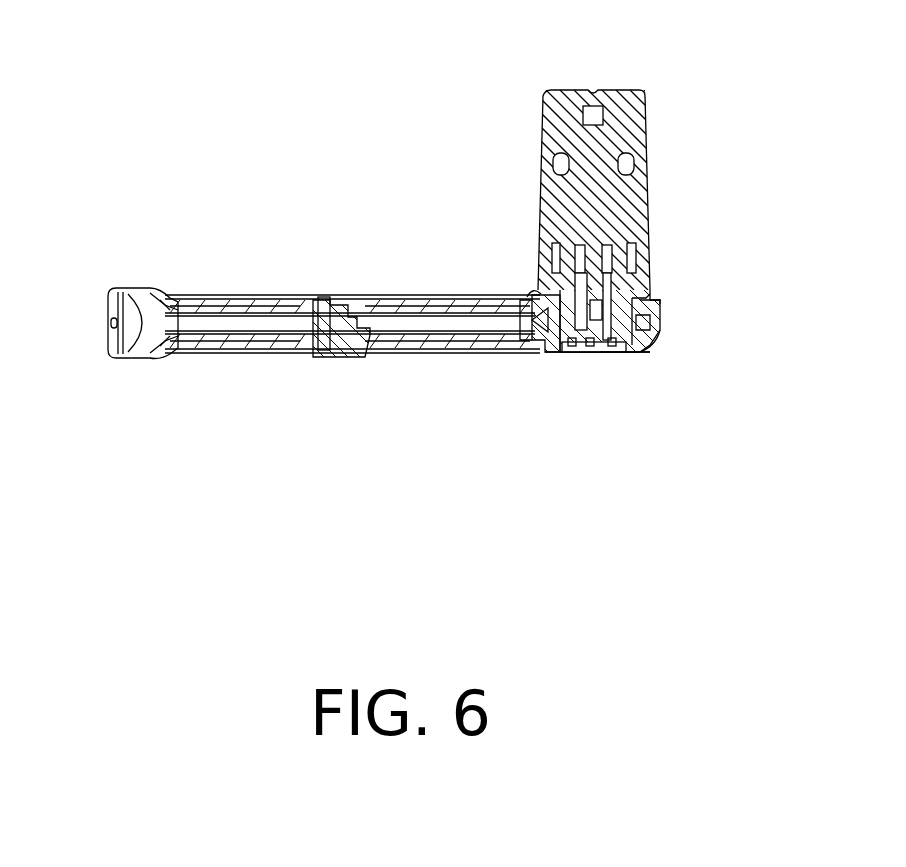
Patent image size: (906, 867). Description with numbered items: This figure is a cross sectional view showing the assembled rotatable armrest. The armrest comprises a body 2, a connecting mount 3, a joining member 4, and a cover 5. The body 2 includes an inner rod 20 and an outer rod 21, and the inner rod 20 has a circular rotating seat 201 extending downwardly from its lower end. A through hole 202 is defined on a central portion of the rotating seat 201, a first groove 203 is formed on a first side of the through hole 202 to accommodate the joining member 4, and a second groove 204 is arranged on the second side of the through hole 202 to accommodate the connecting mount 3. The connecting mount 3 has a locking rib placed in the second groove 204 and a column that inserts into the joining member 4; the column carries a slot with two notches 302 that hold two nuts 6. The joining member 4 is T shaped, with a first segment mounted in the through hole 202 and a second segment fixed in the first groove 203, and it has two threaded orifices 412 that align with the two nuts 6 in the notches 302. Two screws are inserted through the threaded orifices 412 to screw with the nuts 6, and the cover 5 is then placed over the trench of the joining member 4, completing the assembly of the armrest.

The body 2 is at (369, 92).
The connecting mount 3 is at (638, 115).
The joining member 4 is at (523, 300).
The cover 5 is at (560, 353).
The nuts 6 is at (640, 290).
The inner rod 20 is at (404, 302).
The outer rod 21 is at (196, 297).
The rotating seat 201 is at (660, 308).
The through hole 202 is at (530, 294).
The first groove 203 is at (658, 338).
The second groove 204 is at (660, 300).
The notches 302 is at (650, 294).
The threaded orifices 412 is at (645, 353).